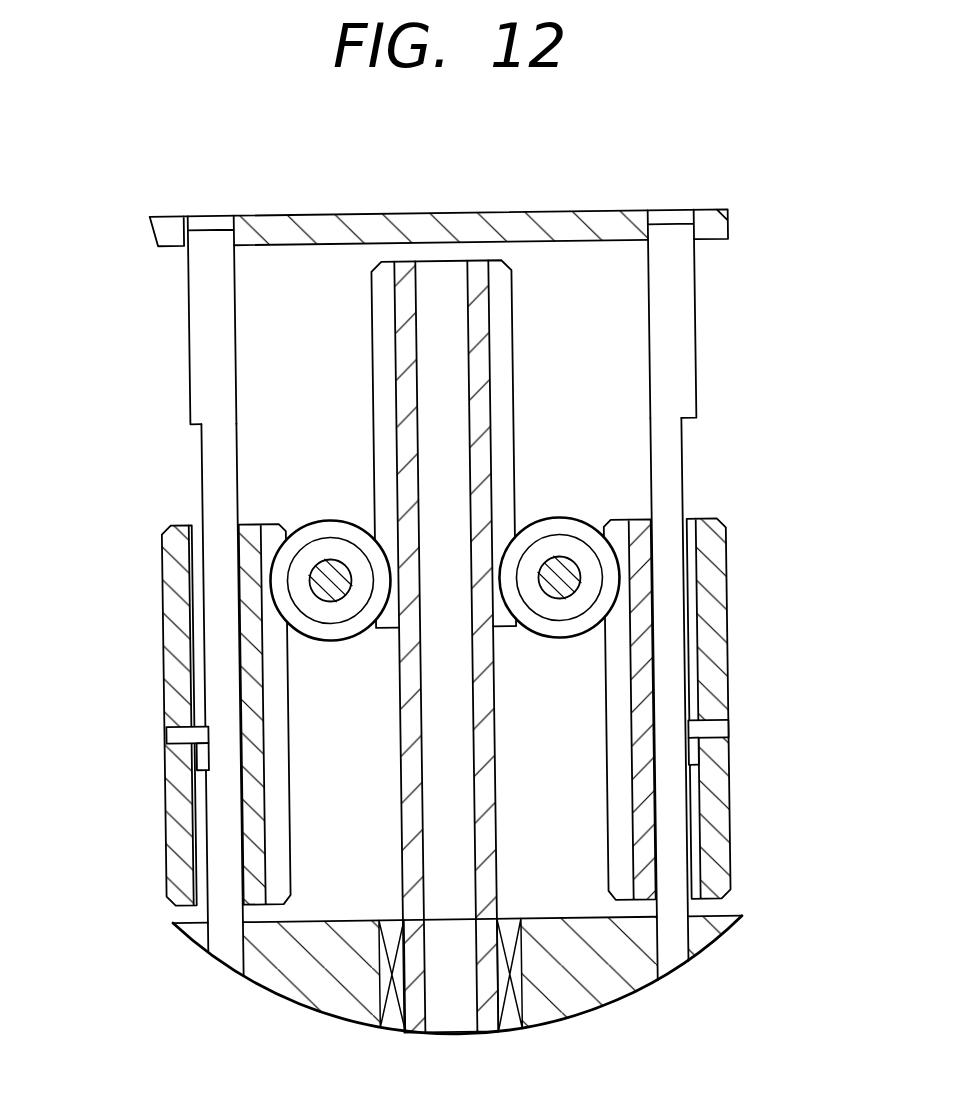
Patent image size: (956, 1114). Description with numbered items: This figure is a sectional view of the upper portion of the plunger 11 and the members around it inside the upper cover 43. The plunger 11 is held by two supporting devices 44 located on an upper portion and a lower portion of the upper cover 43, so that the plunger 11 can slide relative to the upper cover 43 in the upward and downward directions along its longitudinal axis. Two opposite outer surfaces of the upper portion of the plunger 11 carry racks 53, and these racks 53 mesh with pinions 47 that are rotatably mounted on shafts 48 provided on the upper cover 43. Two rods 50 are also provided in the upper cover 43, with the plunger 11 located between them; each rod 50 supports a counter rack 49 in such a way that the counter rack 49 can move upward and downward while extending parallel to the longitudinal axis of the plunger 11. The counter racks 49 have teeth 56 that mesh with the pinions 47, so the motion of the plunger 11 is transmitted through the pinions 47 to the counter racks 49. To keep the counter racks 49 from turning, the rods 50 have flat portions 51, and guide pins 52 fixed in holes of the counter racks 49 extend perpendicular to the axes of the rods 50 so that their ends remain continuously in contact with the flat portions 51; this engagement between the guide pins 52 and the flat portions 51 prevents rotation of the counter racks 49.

The plunger 11 is at (410, 876).
The upper cover 43 is at (460, 222).
The supporting device 44 is at (512, 979).
The pinion 47 is at (344, 529).
The shaft 48 is at (580, 587).
The counter rack 49 is at (183, 610).
The rod 50 is at (213, 376).
The flat portion 51 is at (207, 455).
The guide pin 52 is at (176, 736).
The rack 53 is at (390, 333).
The teeth 56 is at (281, 770).